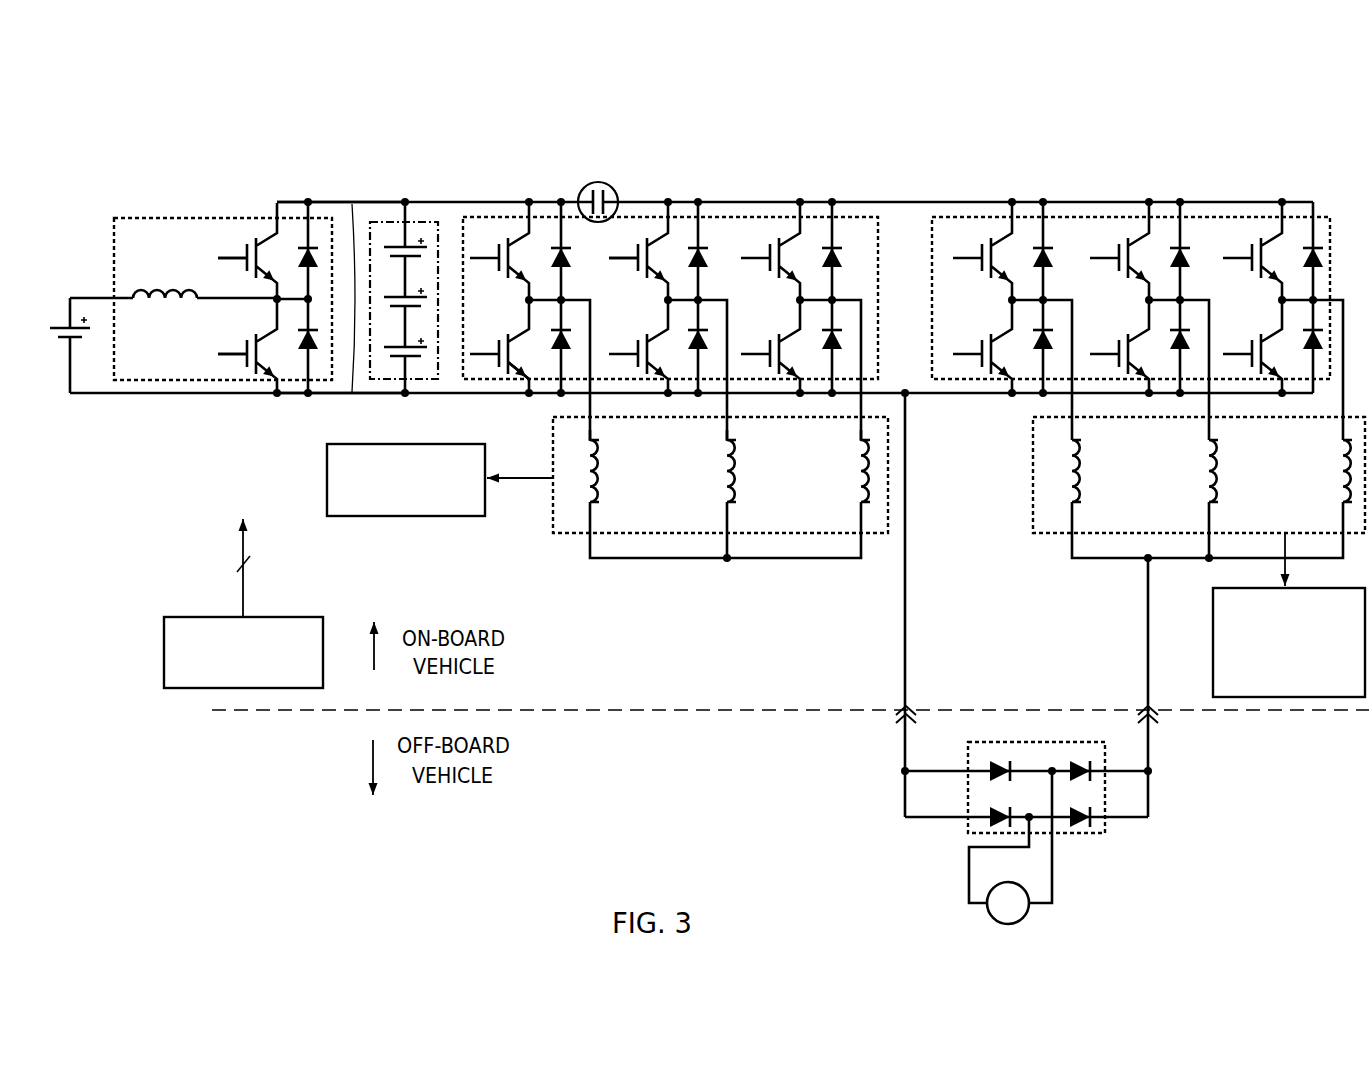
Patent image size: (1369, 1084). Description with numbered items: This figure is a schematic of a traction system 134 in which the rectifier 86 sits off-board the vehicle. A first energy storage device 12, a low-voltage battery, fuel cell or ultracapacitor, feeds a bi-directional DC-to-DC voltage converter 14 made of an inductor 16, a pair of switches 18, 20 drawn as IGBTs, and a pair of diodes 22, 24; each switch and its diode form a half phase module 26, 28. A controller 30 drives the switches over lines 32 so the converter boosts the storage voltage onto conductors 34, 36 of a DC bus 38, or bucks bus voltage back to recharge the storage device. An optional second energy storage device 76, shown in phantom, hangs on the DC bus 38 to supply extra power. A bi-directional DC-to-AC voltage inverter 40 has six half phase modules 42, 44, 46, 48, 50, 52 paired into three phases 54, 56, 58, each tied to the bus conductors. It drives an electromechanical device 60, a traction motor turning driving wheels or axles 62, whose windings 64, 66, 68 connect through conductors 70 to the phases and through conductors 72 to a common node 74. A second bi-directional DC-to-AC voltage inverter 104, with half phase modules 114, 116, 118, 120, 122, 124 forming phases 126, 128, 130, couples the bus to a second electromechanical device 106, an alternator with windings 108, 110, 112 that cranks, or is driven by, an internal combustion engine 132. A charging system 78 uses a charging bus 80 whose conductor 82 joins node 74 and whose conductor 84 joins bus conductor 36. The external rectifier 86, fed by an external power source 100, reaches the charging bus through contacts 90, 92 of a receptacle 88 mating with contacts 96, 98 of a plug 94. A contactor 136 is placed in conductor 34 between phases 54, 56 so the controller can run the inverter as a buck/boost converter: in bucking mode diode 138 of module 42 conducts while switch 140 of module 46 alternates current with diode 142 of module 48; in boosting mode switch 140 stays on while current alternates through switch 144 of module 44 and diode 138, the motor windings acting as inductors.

The first energy storage device 12 is at (61, 322).
The bi-directional DC-to-DC voltage converter 14 is at (143, 218).
The inductor 16 is at (143, 292).
The switch 18 is at (229, 256).
The switch 20 is at (229, 337).
The diode 22 is at (311, 250).
The diode 24 is at (311, 349).
The half phase module 26 is at (267, 231).
The half phase module 28 is at (212, 338).
The controller 30 is at (164, 650).
The lines 32 is at (243, 585).
The conductor 34 is at (355, 200).
The conductor 36 is at (353, 396).
The DC bus 38 is at (344, 298).
The bi-directional DC-to-AC voltage inverter 40 is at (473, 216).
The half phase module 42 is at (519, 219).
The half phase module 44 is at (514, 310).
The half phase module 46 is at (655, 219).
The half phase module 48 is at (654, 310).
The half phase module 50 is at (793, 219).
The half phase module 52 is at (787, 310).
The phase 54 is at (534, 293).
The phase 56 is at (678, 293).
The phase 58 is at (801, 293).
The electromechanical device 60 is at (553, 445).
The driving wheels or axles 62 is at (327, 490).
The winding 64 is at (597, 480).
The winding 66 is at (735, 480).
The winding 68 is at (862, 452).
The conductors 70 is at (592, 438).
The conductors 72 is at (592, 528).
The node 74 is at (716, 562).
The second energy storage device 76 is at (425, 381).
The charging system 78 is at (1026, 852).
The charging bus 80 is at (1023, 605).
The conductor 82 is at (1167, 687).
The conductor 84 is at (906, 633).
The rectifier 86 is at (968, 787).
The receptacle 88 is at (832, 700).
The contact 90 is at (901, 707).
The contact 92 is at (1143, 707).
The plug 94 is at (847, 727).
The contact 96 is at (901, 717).
The contact 98 is at (1152, 718).
The external power source 100 is at (1003, 925).
The second bi-directional DC-to-AC voltage inverter 104 is at (957, 215).
The second electromechanical device 106 is at (1033, 445).
The winding 108 is at (1082, 480).
The winding 110 is at (1220, 480).
The winding 112 is at (1343, 452).
The half phase module 114 is at (993, 231).
The half phase module 116 is at (999, 310).
The half phase module 118 is at (1130, 231).
The half phase module 120 is at (1136, 310).
The half phase module 122 is at (1265, 231).
The half phase module 124 is at (1269, 310).
The phase 126 is at (1007, 286).
The phase 128 is at (1147, 286).
The phase 130 is at (1280, 288).
The internal combustion engine 132 is at (1213, 660).
The traction system 134 is at (834, 95).
The contactor 136 is at (599, 181).
The diode 138 is at (572, 258).
The switch 140 is at (645, 240).
The diode 142 is at (706, 348).
The switch 144 is at (507, 354).